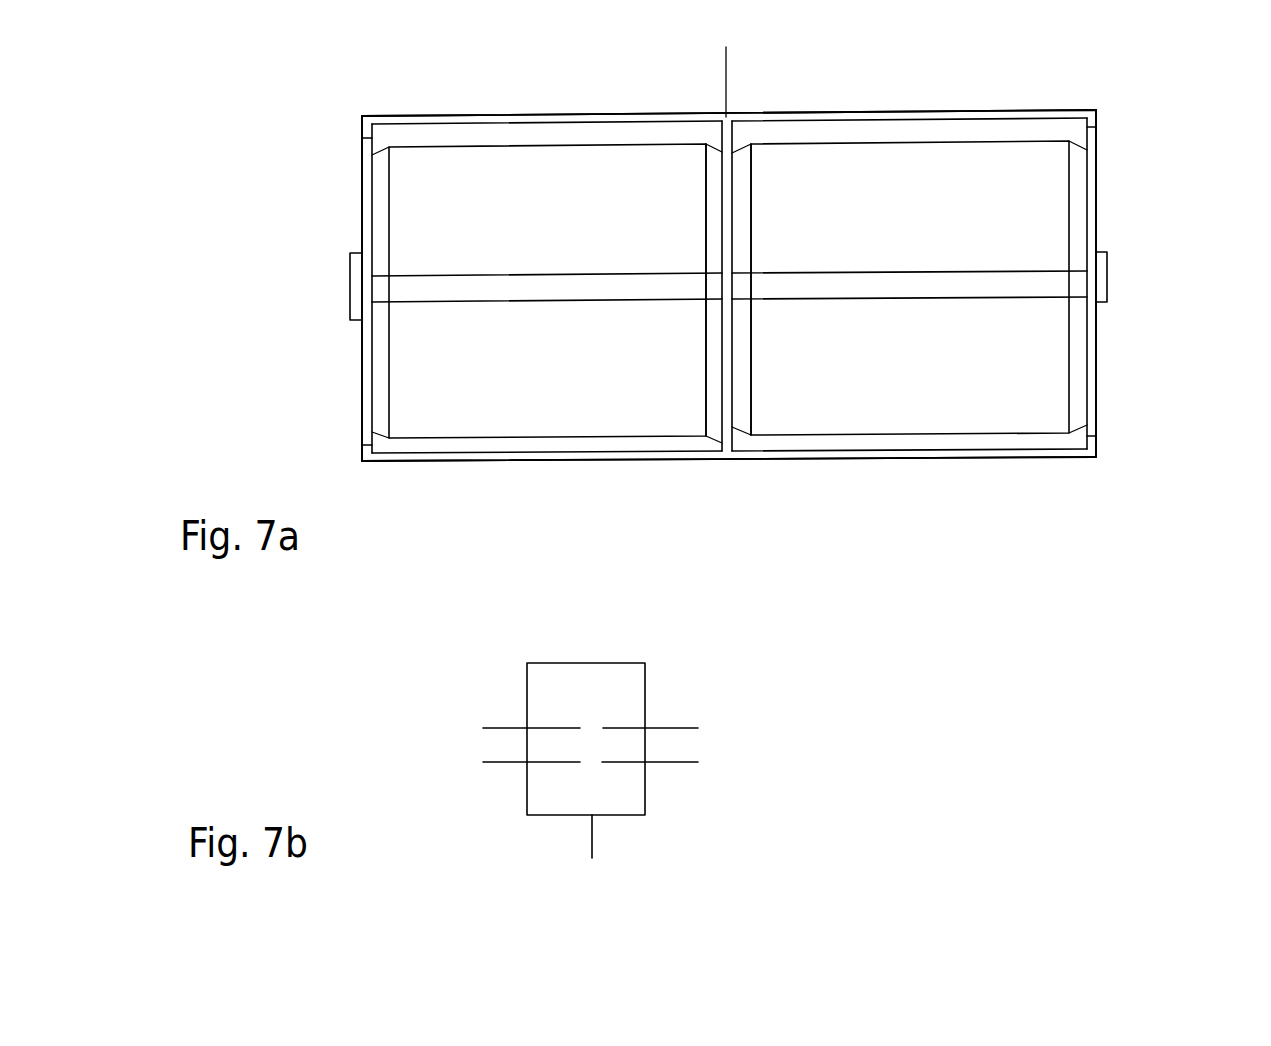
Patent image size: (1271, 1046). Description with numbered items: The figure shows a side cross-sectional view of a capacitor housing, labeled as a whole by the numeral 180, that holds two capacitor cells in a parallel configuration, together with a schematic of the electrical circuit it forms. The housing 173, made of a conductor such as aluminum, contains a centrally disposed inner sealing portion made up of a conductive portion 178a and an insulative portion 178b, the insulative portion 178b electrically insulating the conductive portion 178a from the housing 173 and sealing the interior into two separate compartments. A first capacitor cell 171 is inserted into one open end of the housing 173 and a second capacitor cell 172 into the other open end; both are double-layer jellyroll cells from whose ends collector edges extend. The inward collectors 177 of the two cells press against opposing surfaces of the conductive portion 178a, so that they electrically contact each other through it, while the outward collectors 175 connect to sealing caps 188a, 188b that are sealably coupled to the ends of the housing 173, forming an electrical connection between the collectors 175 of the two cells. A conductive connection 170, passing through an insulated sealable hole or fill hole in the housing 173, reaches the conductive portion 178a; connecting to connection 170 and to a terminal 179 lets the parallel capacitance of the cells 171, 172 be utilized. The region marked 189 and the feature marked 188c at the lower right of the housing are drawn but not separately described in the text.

In FIG. 7A, the filter assembly 180 is at (262, 87).
In FIG. 7A, the conductive connection 170 is at (726, 97).
In FIG. 7B, the conductive connection 170 is at (592, 840).
In FIG. 7A, the first capacitor cell 171 is at (515, 165).
In FIG. 7B, the first capacitor cell 171 is at (492, 753).
In FIG. 7A, the second capacitor cell 172 is at (905, 167).
In FIG. 7B, the second capacitor cell 172 is at (687, 748).
In FIG. 7A, the housing 173 is at (410, 122).
In FIG. 7A, the collectors 175 is at (377, 380).
In FIG. 7A, the collectors 177 is at (747, 410).
In FIG. 7A, the conductive portion 178a is at (733, 318).
In FIG. 7A, the insulative portion 178b is at (909, 358).
In FIG. 7A, the terminal 179 is at (350, 305).
In FIG. 7B, the terminal 179 is at (527, 677).
In FIG. 7A, the sealing cap 188a is at (363, 180).
In FIG. 7A, the sealing cap 188b is at (1088, 202).
In FIG. 7A, the bottom wall 188c is at (1093, 437).
In FIG. 7A, the center bar 189 is at (1018, 287).